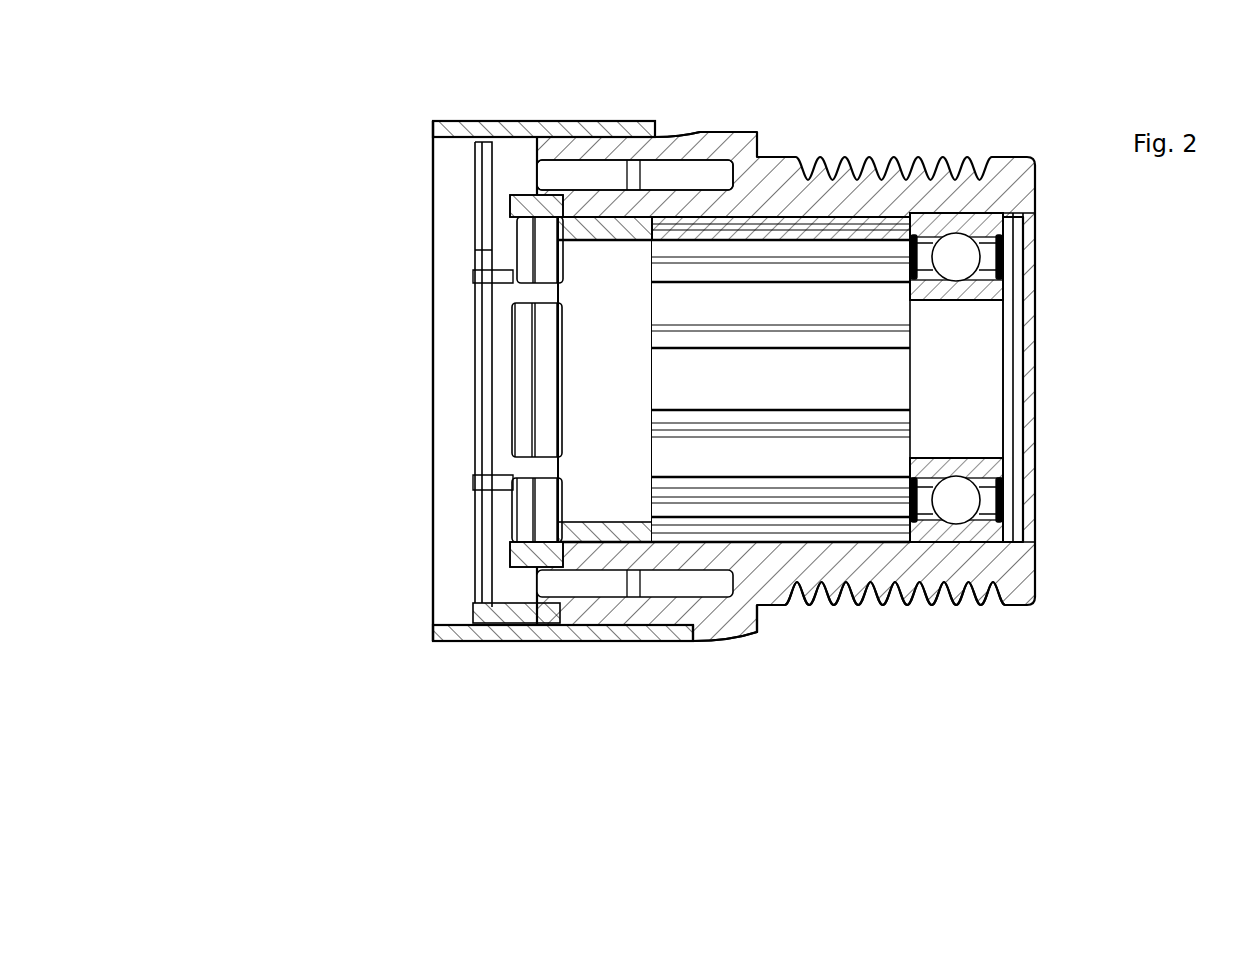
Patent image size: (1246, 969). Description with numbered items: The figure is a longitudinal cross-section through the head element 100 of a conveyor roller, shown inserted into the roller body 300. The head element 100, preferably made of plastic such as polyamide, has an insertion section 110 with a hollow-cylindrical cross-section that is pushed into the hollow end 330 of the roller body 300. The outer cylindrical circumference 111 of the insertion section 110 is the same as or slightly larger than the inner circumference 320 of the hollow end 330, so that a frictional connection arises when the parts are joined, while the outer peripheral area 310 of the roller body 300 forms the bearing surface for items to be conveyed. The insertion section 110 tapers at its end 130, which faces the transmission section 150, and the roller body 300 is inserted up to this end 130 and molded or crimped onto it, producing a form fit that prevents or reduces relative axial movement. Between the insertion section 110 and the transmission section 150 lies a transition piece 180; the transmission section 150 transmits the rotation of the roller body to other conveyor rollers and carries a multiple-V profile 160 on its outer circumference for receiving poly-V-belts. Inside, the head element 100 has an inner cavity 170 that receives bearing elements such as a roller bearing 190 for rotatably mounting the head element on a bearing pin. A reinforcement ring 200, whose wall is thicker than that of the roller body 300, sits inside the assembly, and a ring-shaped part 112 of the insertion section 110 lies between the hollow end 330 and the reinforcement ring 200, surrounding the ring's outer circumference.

The head element 100 is at (823, 414).
The insertion section 110 is at (693, 97).
The outer cylindrical circumference 111 is at (627, 130).
The ring-shaped part 112 is at (575, 215).
The tapered end 130 is at (683, 137).
The transmission section 150 is at (1033, 607).
The multiple-V profile 160 is at (925, 595).
The inner cavity 170 is at (677, 300).
The transition piece 180 is at (727, 620).
The roller bearing 190 is at (978, 470).
The reinforcement ring 200 is at (580, 535).
The roller body 300 is at (450, 570).
The outer peripheral area 310 is at (472, 647).
The inner circumference 320 is at (580, 145).
The hollow end 330 is at (567, 693).